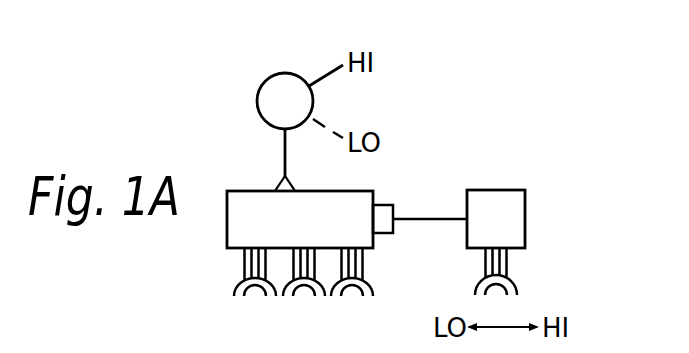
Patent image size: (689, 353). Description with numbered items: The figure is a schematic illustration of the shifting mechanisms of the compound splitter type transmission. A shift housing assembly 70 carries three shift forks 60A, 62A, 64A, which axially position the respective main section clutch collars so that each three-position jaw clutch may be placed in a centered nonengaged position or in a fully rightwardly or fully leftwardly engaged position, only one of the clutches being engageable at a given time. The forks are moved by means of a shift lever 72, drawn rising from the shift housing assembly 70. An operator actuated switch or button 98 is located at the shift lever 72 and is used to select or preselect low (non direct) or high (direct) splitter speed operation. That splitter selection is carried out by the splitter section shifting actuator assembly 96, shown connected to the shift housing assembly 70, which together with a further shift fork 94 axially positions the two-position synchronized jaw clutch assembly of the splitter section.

The shift lever 72 is at (285, 139).
The operator actuated switch or button 98 is at (326, 75).
The shift housing assembly 70 is at (243, 218).
The shift fork 60A is at (237, 290).
The shift fork 62A is at (312, 267).
The shift fork 64A is at (363, 266).
The splitter section shifting actuator assembly 96 is at (502, 190).
The shift fork 94 is at (505, 264).